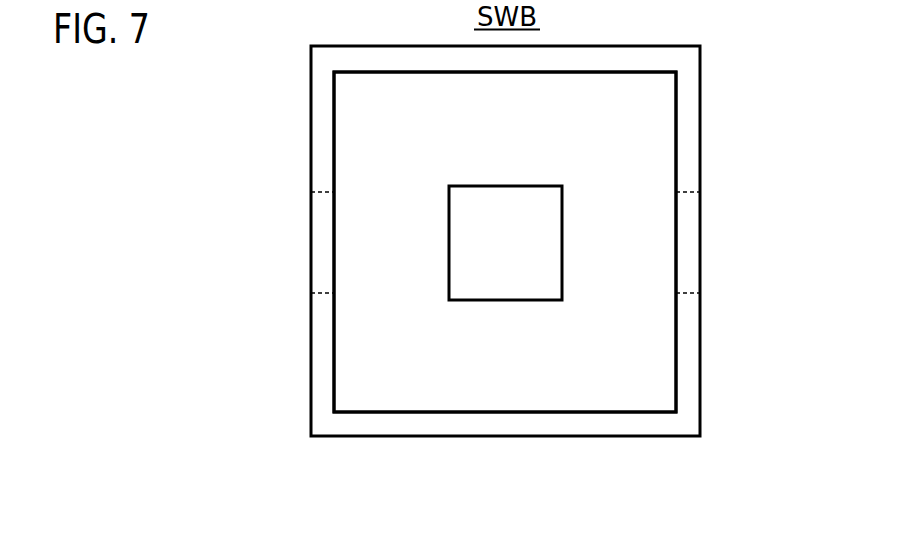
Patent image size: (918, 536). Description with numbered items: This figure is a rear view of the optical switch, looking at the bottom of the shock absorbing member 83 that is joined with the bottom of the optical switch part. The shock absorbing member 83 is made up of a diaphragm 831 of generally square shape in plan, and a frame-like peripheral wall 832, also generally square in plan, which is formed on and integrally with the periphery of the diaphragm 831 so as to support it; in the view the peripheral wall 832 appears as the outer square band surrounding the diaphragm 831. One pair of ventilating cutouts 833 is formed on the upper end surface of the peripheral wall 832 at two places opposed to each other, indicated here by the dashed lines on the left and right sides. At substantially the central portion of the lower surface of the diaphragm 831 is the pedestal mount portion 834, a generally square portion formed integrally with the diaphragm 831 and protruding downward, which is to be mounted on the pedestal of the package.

The shock absorbing member 83 is at (308, 367).
The diaphragm 831 is at (652, 97).
The frame-like peripheral wall 832 is at (688, 155).
The ventilating cutouts 833 is at (325, 236).
The pedestal mount portion 834 is at (546, 278).